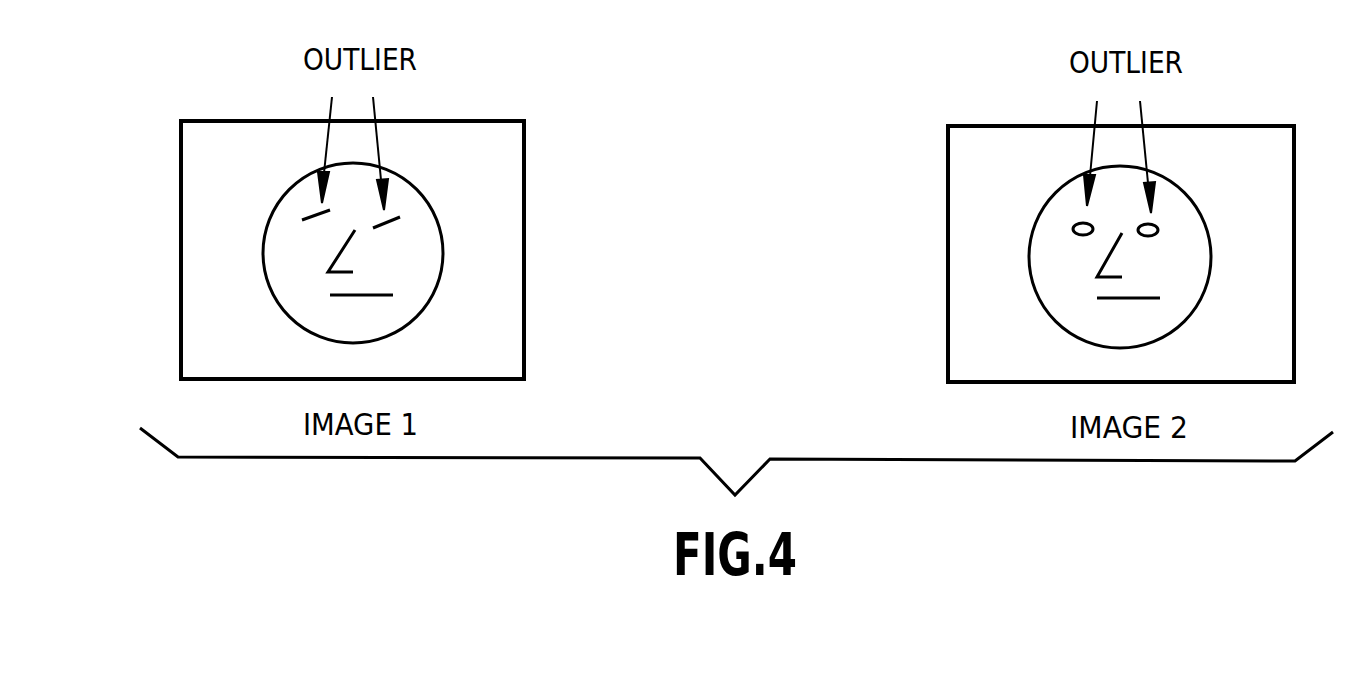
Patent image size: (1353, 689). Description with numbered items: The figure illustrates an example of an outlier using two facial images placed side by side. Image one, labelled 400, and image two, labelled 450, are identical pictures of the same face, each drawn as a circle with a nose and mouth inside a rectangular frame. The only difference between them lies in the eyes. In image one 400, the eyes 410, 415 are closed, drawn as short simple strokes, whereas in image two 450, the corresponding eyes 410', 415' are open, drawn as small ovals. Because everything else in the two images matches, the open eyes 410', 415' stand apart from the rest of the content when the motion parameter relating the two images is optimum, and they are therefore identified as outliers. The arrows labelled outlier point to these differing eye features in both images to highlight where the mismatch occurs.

The image 1 400 is at (427, 120).
The eye 410 is at (261, 186).
The eye 415 is at (434, 208).
The image 2 450 is at (1194, 125).
The eye 410' is at (1024, 196).
The eye 415' is at (1208, 211).